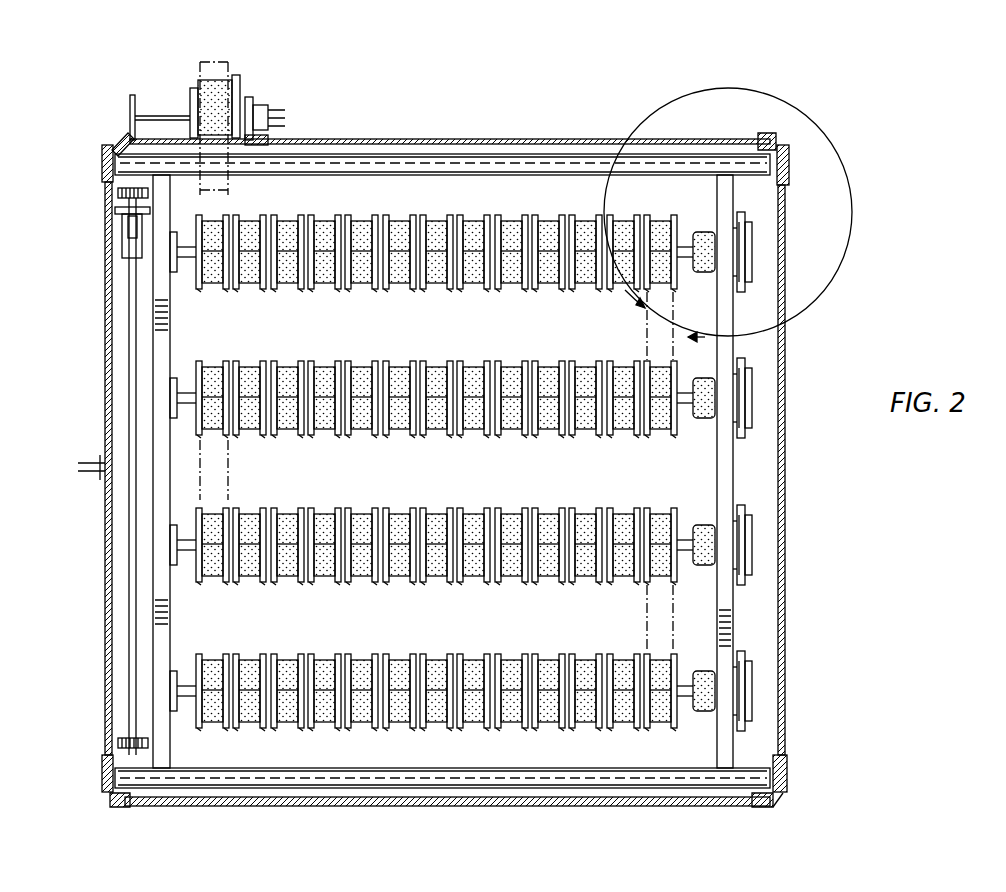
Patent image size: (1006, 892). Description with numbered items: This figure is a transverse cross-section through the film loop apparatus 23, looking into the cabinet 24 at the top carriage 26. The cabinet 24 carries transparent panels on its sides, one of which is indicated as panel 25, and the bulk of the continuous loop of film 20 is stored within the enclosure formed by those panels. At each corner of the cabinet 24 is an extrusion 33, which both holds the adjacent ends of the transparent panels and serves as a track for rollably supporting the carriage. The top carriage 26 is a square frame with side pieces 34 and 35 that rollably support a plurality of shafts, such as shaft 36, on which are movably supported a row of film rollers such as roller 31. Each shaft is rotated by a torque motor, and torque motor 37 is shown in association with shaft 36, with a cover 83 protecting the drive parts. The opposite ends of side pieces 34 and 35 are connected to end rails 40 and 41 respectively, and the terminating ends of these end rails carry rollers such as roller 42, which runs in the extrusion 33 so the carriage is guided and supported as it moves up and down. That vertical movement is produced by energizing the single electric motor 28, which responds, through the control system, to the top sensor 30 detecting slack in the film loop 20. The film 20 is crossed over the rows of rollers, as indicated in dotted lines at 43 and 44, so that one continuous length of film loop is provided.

The continuous loop of film 20 is at (198, 68).
The film loop apparatus 23 is at (605, 128).
The cabinet 24 is at (788, 790).
The transparent panel 25 is at (785, 520).
The top carriage 26 is at (742, 478).
The electric motor 28 is at (128, 252).
The top sensor 30 is at (238, 92).
The film roller 31 is at (236, 290).
The extrusion 33 is at (102, 165).
The side piece 34 is at (153, 340).
The side piece 35 is at (733, 630).
The shaft 36 is at (430, 290).
The torque motor 37 is at (752, 262).
The end rail 40 is at (430, 155).
The end rail 41 is at (425, 788).
The roller 42 is at (114, 145).
The film crossover 43 is at (228, 470).
The film crossover 44 is at (645, 623).
The cover 83 is at (705, 420).